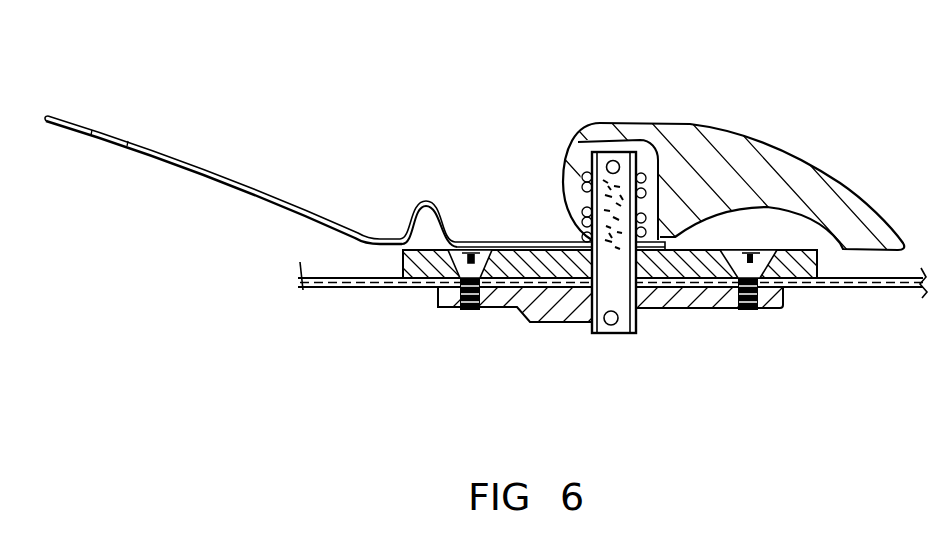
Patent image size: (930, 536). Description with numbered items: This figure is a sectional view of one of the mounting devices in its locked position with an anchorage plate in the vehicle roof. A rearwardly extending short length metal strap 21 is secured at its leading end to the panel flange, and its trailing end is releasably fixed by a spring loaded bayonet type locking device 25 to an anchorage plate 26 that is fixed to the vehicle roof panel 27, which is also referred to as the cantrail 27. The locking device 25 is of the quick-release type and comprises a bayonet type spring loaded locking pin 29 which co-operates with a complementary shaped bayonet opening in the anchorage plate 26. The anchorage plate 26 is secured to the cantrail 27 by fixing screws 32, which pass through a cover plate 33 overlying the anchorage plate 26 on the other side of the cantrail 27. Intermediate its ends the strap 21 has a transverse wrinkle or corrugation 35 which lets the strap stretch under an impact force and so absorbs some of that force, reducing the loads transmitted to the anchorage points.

The metal strap 21 is at (168, 157).
The spring loaded bayonet type locking device 25 is at (724, 100).
The anchorage plate 26 is at (677, 300).
The vehicle roof panel (cantrail) 27 is at (343, 287).
The bayonet type spring loaded locking pin 29 is at (617, 330).
The fixing screws 32 is at (467, 312).
The cover plate 33 is at (843, 292).
The transverse wrinkle or corrugation 35 is at (428, 202).